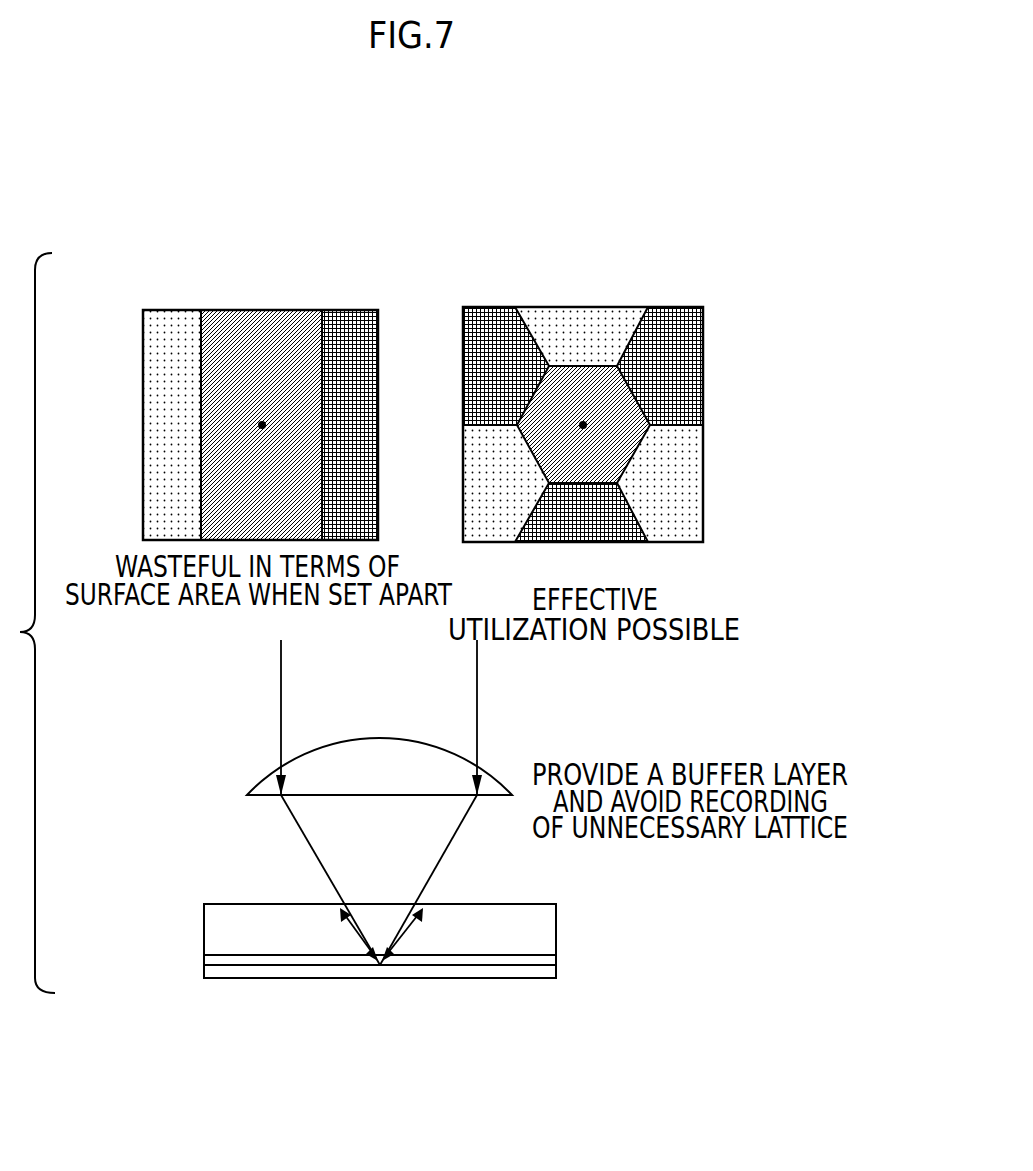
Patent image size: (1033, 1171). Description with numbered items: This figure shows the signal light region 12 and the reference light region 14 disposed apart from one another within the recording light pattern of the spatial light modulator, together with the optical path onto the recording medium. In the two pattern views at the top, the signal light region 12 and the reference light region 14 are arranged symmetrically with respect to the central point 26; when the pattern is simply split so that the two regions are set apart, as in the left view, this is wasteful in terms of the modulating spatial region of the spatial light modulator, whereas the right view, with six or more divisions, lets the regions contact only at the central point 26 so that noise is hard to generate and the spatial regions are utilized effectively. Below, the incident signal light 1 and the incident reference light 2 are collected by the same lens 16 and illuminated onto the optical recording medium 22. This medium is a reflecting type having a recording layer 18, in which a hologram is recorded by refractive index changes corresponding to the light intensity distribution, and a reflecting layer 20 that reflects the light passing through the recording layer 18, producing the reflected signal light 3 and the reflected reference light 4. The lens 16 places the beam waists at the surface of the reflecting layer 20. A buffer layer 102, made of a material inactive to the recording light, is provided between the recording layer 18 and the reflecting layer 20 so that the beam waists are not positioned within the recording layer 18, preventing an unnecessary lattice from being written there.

The incident signal light 1 is at (477, 700).
The incident reference light 2 is at (281, 698).
The reflected signal light 3 is at (355, 937).
The reflected reference light 4 is at (405, 938).
The signal light region 12 is at (187, 315).
The reference light region 14 is at (348, 315).
The lens 16 is at (395, 738).
The recording layer 18 is at (556, 918).
The reflecting layer 20 is at (556, 972).
The optical recording medium 22 is at (635, 902).
The central point 26 is at (262, 425).
The buffer layer 102 is at (556, 958).